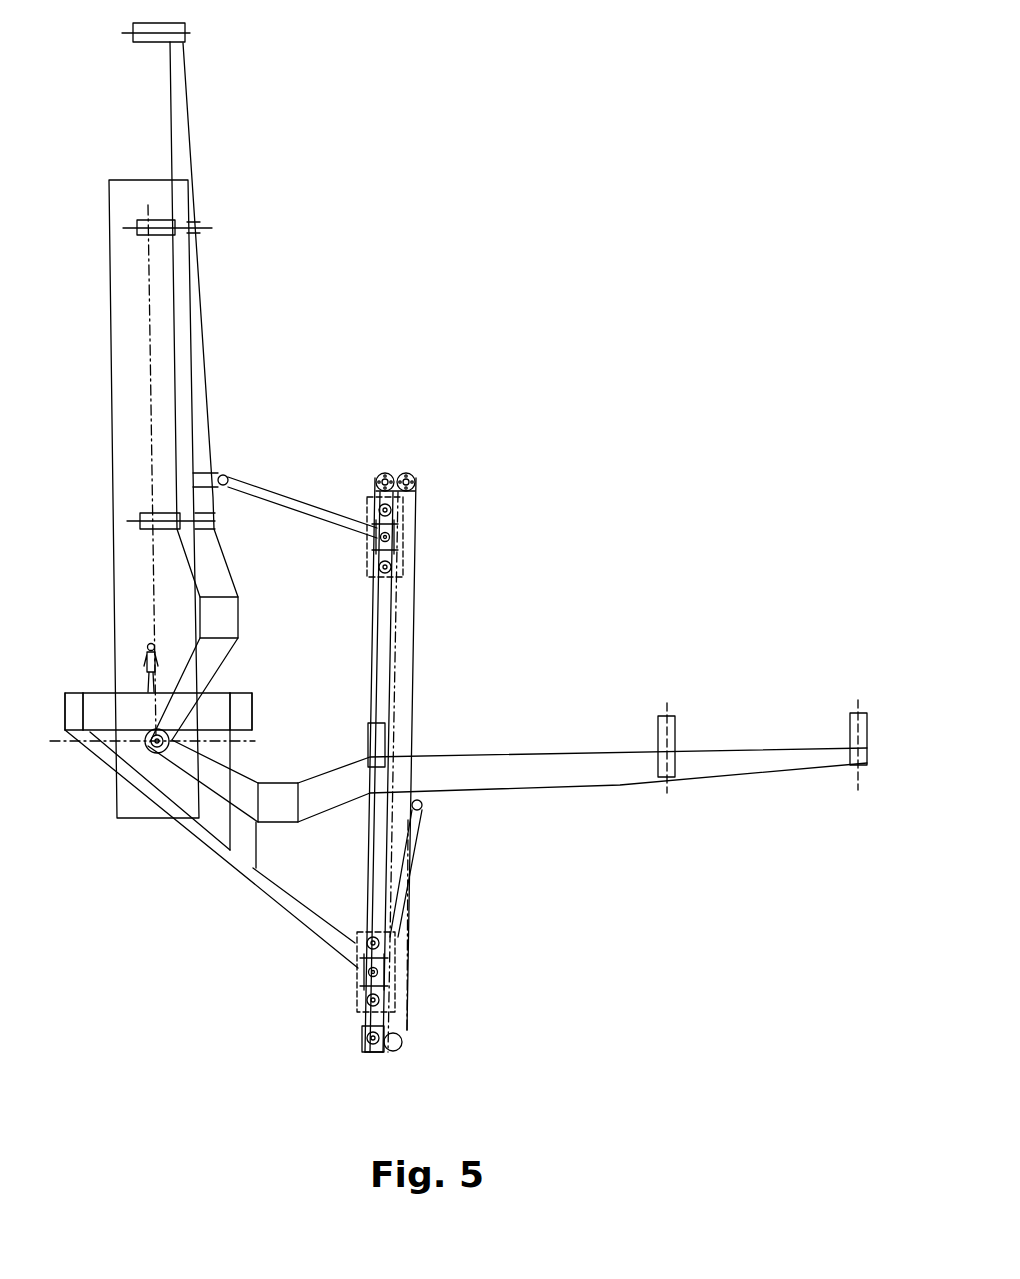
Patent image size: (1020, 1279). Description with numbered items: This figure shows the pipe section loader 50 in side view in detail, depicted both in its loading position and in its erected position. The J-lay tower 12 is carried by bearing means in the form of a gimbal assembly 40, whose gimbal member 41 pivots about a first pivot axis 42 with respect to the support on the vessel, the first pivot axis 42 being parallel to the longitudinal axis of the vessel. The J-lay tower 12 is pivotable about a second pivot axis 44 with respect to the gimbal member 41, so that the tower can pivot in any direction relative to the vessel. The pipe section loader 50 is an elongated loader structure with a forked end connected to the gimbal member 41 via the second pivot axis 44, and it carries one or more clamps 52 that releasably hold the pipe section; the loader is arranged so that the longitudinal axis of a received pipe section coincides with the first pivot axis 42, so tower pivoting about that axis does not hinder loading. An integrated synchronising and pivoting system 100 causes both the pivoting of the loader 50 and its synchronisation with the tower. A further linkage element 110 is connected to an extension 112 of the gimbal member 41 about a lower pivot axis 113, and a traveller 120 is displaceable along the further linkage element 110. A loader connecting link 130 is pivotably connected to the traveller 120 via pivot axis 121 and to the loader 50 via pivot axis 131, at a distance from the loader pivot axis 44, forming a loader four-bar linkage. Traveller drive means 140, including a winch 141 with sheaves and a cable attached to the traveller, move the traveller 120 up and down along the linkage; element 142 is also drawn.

The J-lay tower 12 is at (132, 377).
The gimbal assembly 40 is at (204, 742).
The gimbal member 41 is at (77, 708).
The first pivot axis 42 is at (230, 745).
The second pivot axis 44 is at (148, 748).
The pipe section loader 50 is at (195, 295).
The clamps 52 is at (140, 223).
The integrated synchronising and pivoting system 100 is at (467, 508).
The further linkage element 110 is at (385, 670).
The extension of the gimbal member 112 is at (245, 887).
The lower pivot axis 113 is at (373, 972).
The traveller 120 is at (430, 544).
The pivot axis 121 is at (397, 522).
The loader connecting link 130 is at (278, 493).
The pivot axis 131 is at (226, 474).
The traveller drive means 140 is at (403, 435).
The winch 141 is at (402, 1043).
The guide rail 142 is at (410, 910).